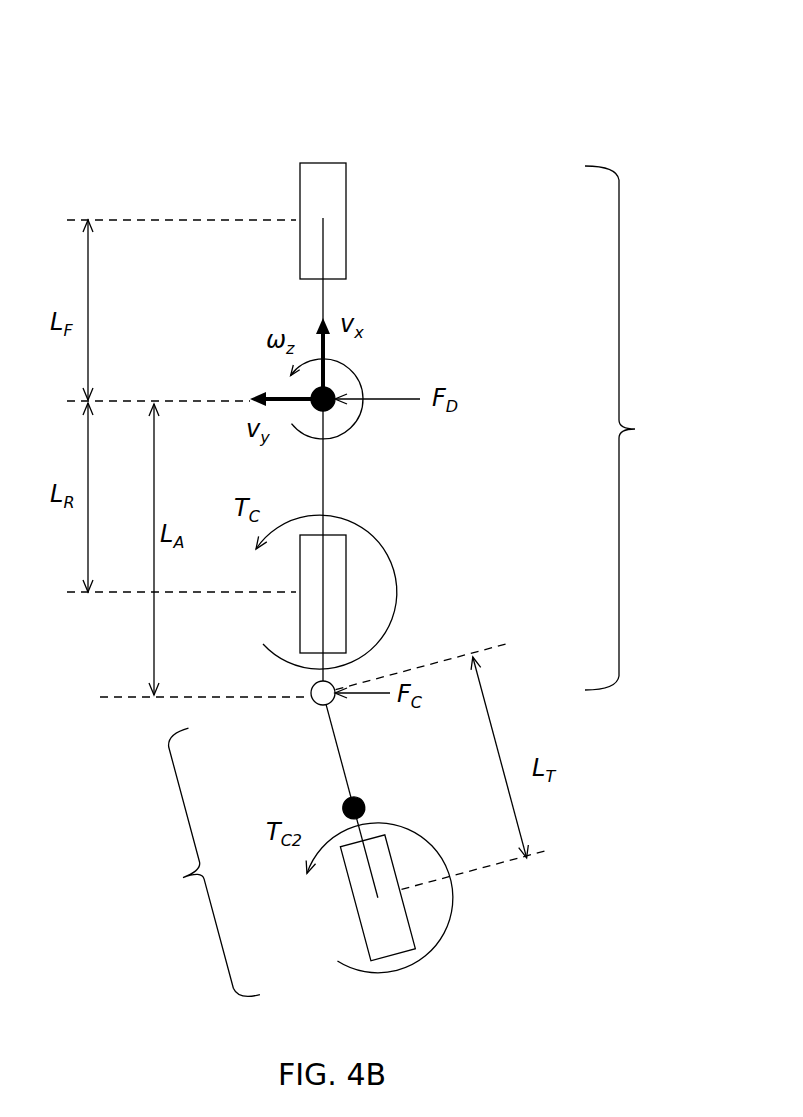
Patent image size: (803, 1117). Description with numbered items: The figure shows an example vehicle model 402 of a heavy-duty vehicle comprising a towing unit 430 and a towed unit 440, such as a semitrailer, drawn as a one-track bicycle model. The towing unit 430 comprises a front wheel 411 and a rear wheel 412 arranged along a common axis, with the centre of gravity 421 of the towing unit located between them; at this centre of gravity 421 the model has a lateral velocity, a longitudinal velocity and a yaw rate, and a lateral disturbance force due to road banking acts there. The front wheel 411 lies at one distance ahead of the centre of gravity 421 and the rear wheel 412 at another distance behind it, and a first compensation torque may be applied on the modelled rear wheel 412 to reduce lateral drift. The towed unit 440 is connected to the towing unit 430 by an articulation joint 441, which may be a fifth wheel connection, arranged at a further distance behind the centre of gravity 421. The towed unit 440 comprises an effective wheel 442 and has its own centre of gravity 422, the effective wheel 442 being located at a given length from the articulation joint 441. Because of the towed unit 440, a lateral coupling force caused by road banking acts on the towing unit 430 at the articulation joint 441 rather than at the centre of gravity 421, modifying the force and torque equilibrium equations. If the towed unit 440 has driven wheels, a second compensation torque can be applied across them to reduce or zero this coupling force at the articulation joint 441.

The vehicle model 402 is at (118, 56).
The front wheel 411 is at (346, 183).
The rear wheel 412 is at (346, 571).
The centre of gravity of the towing unit 421 is at (333, 410).
The centre of gravity of the towed unit 422 is at (334, 809).
The towing unit 430 is at (635, 429).
The towed unit 440 is at (153, 880).
The articulation joint 441 is at (312, 702).
The effective wheel 442 is at (346, 930).